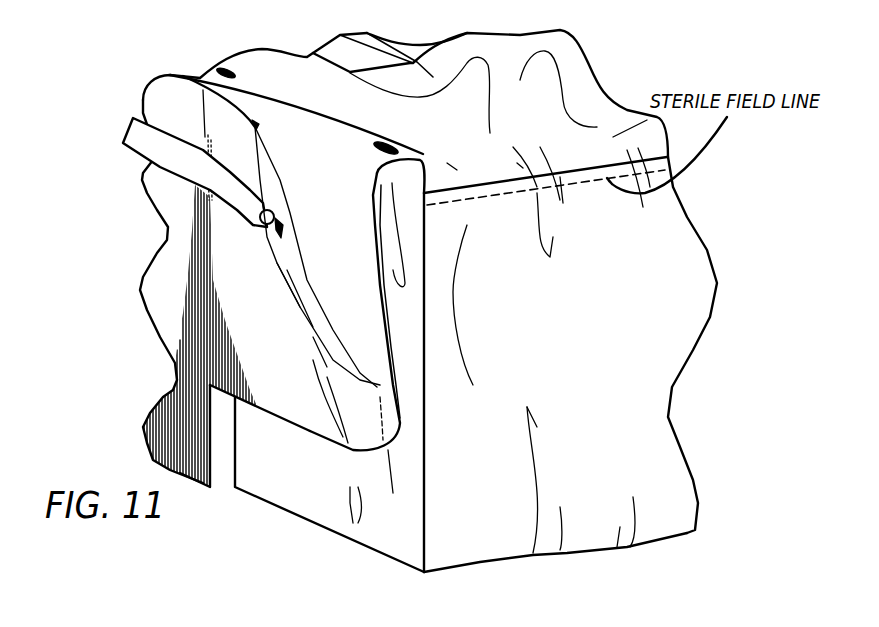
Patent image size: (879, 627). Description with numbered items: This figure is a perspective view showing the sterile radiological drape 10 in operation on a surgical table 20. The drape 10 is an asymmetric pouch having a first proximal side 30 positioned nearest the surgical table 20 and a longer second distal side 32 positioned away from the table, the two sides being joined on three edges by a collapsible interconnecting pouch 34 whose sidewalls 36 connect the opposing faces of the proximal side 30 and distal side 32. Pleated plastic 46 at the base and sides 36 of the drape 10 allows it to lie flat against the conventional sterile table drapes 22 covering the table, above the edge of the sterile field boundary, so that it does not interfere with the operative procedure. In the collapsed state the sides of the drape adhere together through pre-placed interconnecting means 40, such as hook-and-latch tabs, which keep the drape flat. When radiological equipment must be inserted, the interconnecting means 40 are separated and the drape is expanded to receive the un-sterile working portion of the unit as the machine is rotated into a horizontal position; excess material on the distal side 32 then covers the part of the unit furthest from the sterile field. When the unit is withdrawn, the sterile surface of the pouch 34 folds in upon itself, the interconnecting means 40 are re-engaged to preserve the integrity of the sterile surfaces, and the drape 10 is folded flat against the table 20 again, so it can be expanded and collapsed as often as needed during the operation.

The sterile radiological drape 10 is at (152, 70).
The surgical table 20 is at (580, 172).
The conventional sterile table drapes 22 is at (566, 67).
The first proximal side 30 is at (388, 322).
The second distal side 32 is at (167, 283).
The interconnecting pouch 34 is at (347, 238).
The sidewalls 36 is at (388, 425).
The interconnecting means 40 is at (375, 145).
The pleated plastic 46 is at (382, 385).